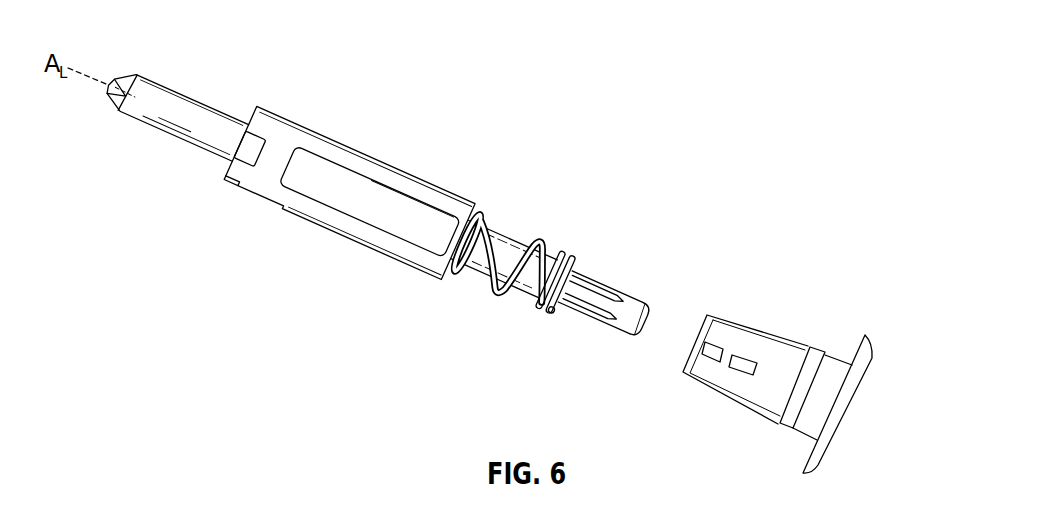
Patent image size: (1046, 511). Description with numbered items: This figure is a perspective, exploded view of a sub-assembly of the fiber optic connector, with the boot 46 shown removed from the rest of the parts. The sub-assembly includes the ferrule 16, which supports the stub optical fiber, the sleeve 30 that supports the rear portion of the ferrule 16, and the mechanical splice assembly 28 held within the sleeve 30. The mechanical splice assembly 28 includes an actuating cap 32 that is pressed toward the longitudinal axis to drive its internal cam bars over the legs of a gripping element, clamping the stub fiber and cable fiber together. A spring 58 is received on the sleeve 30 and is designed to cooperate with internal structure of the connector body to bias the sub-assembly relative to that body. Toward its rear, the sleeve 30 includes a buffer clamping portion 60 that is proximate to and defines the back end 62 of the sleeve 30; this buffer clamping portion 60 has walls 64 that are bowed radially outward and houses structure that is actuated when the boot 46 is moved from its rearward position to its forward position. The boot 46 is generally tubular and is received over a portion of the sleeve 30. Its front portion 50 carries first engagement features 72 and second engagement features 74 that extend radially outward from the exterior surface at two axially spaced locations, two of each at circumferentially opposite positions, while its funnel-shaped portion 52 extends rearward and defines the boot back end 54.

The ferrule 16 is at (192, 100).
The sleeve 30 is at (299, 121).
The mechanical splice assembly 28 is at (364, 178).
The actuating cap 32 is at (407, 198).
The spring 58 is at (498, 217).
The buffer clamping portion 60 is at (612, 330).
The back end 62 is at (648, 311).
The walls 64 is at (596, 272).
The boot 46 is at (809, 361).
The front portion 50 is at (745, 357).
The funnel-shaped portion 52 is at (833, 322).
The boot back end 54 is at (877, 394).
The first engagement features 72 is at (711, 354).
The second engagement features 74 is at (742, 373).